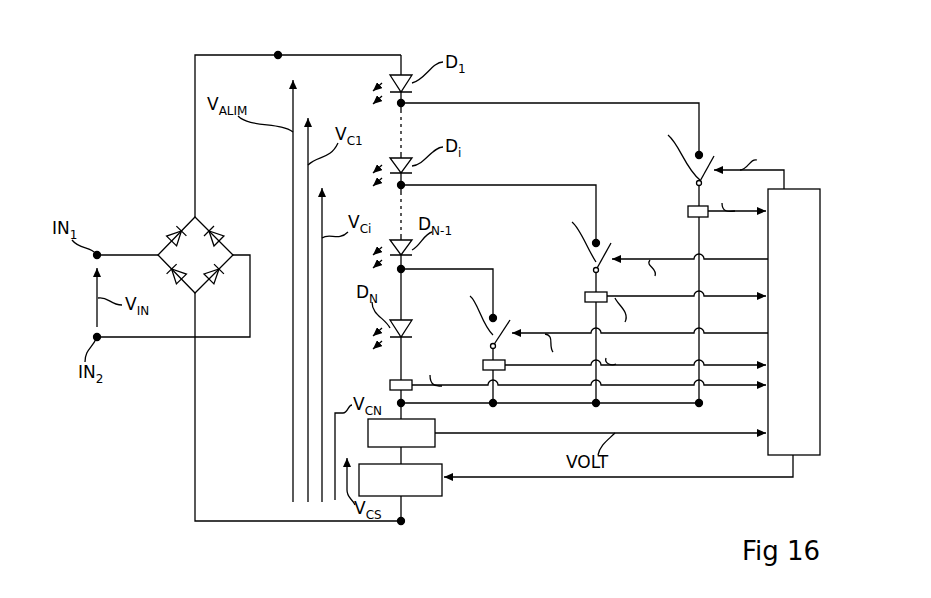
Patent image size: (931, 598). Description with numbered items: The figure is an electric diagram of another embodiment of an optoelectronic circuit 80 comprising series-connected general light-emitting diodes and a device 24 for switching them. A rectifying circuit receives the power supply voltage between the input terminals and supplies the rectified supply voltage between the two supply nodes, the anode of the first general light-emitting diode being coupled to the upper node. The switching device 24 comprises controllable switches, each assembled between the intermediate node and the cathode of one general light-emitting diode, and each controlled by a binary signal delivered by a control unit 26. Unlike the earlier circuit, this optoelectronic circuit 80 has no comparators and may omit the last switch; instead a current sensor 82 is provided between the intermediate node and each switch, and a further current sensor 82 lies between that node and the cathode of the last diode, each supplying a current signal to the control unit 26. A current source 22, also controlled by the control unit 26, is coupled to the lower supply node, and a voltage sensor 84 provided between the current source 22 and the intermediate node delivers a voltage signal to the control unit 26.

The current source 22 is at (312, 350).
The device for switching general light-emitting diodes 24 is at (172, 234).
The control unit 26 is at (792, 188).
The optoelectronic circuit 80 is at (599, 229).
The current sensor 82 is at (688, 211).
The voltage sensor 84 is at (437, 445).